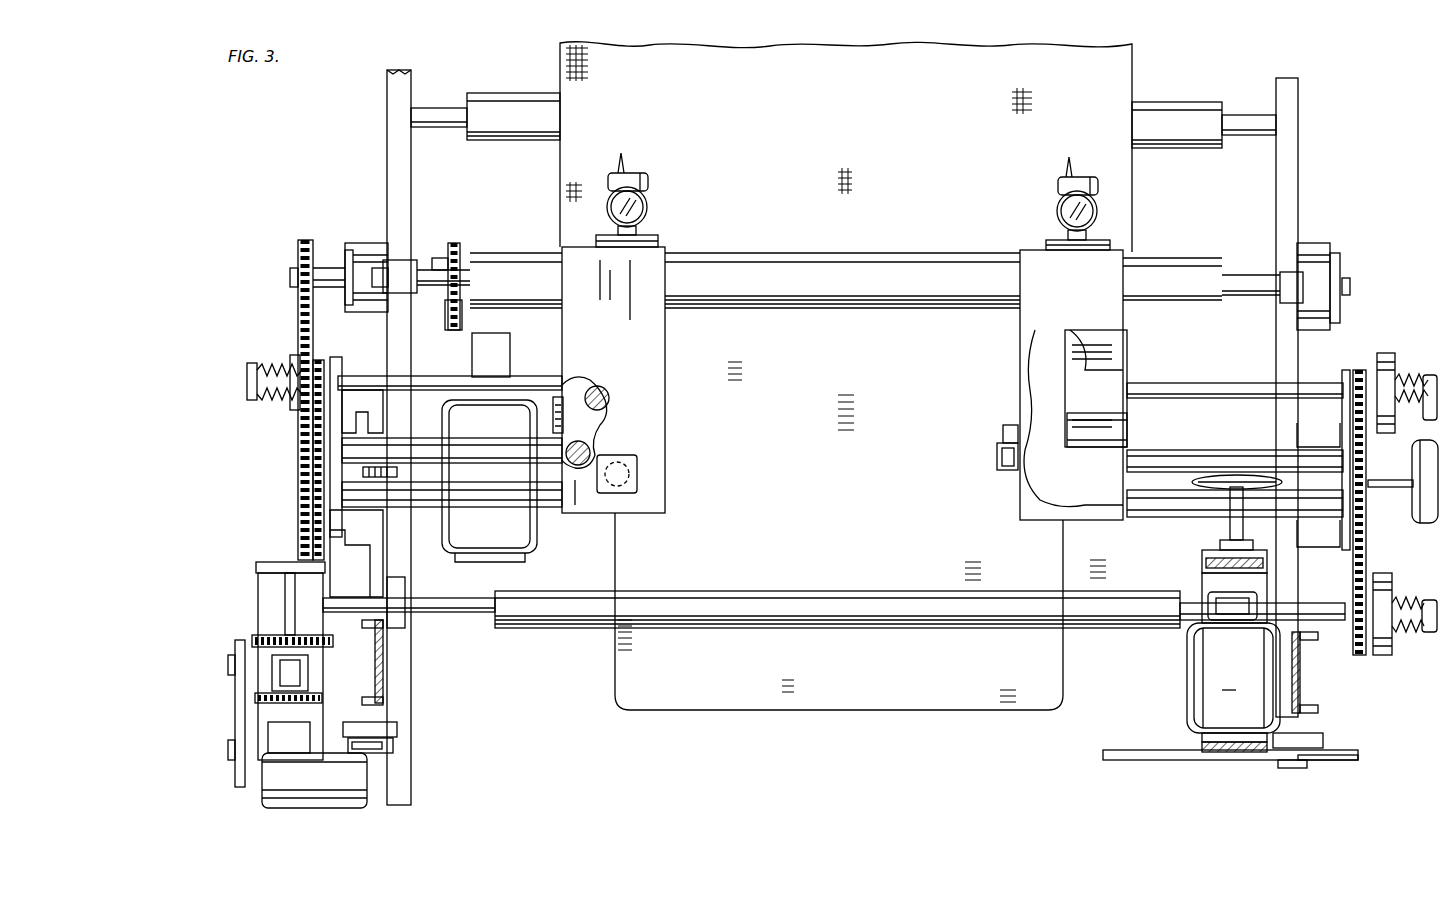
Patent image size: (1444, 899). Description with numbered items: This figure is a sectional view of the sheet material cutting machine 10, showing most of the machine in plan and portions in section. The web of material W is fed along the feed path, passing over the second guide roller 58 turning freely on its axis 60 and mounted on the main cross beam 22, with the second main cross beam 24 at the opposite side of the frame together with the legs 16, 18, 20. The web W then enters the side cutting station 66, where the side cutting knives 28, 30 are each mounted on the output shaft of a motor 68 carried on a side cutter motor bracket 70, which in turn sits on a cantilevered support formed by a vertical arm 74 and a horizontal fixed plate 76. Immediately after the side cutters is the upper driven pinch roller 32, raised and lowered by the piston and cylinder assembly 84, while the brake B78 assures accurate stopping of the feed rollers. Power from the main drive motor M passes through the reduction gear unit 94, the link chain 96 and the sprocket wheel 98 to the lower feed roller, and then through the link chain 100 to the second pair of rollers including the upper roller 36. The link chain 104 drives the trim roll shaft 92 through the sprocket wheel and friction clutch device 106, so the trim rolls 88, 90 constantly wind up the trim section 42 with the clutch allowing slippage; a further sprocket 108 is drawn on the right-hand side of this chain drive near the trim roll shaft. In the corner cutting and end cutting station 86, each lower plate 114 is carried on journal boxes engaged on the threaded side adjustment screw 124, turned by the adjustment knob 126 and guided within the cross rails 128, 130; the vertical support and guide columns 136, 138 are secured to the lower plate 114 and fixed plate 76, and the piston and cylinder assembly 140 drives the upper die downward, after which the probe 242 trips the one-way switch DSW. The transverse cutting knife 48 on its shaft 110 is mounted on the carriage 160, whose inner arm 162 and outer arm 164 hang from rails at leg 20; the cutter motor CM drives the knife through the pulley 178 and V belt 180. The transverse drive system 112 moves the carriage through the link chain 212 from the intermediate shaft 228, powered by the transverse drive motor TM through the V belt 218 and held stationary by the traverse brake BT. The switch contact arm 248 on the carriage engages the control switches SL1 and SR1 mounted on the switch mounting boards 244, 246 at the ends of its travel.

The web material W is at (786, 58).
The sheet material cutting machine 10 is at (1276, 34).
The main cross beam 22 is at (404, 74).
The main cross beam 24 is at (1299, 92).
The second guide roller 58 is at (1188, 106).
The guide roller axis 60 is at (1240, 118).
The driven pinch roller 32 is at (785, 253).
The horizontal fixed plate 76 is at (660, 334).
The side cutting station 66 is at (610, 164).
The side cutting knife 28 is at (625, 167).
The side cutting knife 30 is at (1066, 168).
The motor 68 is at (648, 185).
The side cutter motor bracket 70 is at (642, 230).
The vertical arm 74 is at (648, 244).
The brake B78 is at (366, 244).
The piston and cylinder assembly 84 is at (405, 288).
The link chain 100 is at (298, 306).
The sprocket wheel 98 is at (446, 246).
The link chain 96 is at (462, 328).
The driven shaft 92 is at (378, 374).
The sprocket wheel and friction clutch device 106 is at (282, 402).
The link chain 104 is at (316, 470).
The leg 16 is at (358, 431).
The leg 18 is at (347, 530).
The cross rail 128 is at (440, 450).
The side adjustment screw 124 is at (388, 470).
The cross rail 130 is at (432, 506).
The reduction gear unit 94 is at (506, 366).
The trim roll 88 is at (552, 408).
The main drive motor M is at (488, 544).
The lower plate 114 is at (585, 384).
The vertical support and guide column 136 is at (602, 392).
The vertical support and guide column 138 is at (592, 450).
The piston and cylinder assembly 140 is at (630, 470).
The corner cutting and end cutting station 86 is at (668, 484).
The trim section 42 is at (1124, 345).
The trim roll 90 is at (1126, 424).
The transverse cutting knife 48 is at (1212, 476).
The shaft 110 is at (1228, 526).
The inner arm 162 is at (1205, 566).
The V belt 180 is at (1208, 590).
The pulley 178 is at (1252, 600).
The cutter motor CM is at (1233, 678).
The outer arm 164 is at (1230, 755).
The carriage 160 is at (1178, 764).
The switch mounting board 246 is at (1320, 736).
The control switch SR1 is at (1292, 768).
The switch contact arm 248 is at (1352, 760).
The leg 20 is at (386, 688).
The sprocket 108 is at (1388, 656).
The adjustment knob 126 is at (1420, 518).
The probe 242 is at (1006, 426).
The one-way switch DSW is at (997, 456).
The driven guide roller 36 is at (893, 628).
The transverse drive system 112 is at (254, 596).
The intermediate shaft 228 is at (290, 600).
The link chain 212 is at (252, 638).
The V belt 218 is at (238, 790).
The traverse brake BT is at (270, 735).
The transverse drive motor TM is at (336, 806).
The switch mounting board 244 is at (394, 728).
The control switch SL1 is at (394, 750).